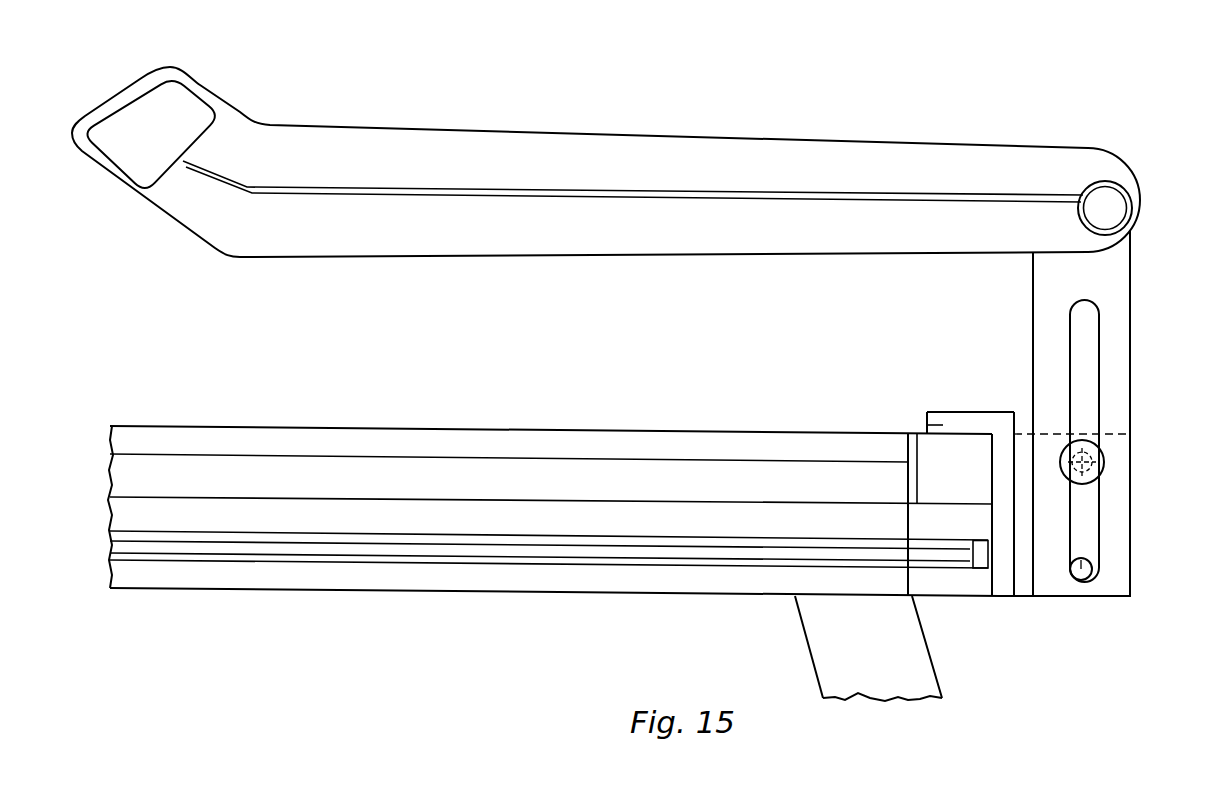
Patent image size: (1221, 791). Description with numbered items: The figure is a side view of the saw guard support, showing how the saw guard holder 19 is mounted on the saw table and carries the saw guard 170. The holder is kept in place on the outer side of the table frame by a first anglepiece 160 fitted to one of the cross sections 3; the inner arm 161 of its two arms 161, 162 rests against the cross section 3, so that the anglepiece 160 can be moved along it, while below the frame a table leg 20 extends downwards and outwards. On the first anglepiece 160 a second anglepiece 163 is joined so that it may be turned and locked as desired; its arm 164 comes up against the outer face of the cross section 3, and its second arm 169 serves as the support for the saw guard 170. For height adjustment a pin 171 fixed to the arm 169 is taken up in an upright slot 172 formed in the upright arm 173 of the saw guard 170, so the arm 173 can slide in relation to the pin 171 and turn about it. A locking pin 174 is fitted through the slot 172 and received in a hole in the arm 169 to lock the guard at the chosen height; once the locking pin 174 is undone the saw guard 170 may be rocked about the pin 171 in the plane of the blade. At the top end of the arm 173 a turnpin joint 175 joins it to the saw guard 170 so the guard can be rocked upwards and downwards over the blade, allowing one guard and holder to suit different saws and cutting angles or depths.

The cross section 3 is at (554, 549).
The saw guard holder 19 is at (1134, 136).
The legs 20 is at (823, 645).
The anglepiece 160 is at (915, 407).
The arm 161 is at (927, 425).
The arm 162 is at (1000, 585).
The second anglepiece 163 is at (1093, 609).
The arm 164 is at (1022, 583).
The second arm 169 is at (1115, 488).
The saw guard 170 is at (580, 150).
The pin 171 is at (1077, 562).
The upright slot 172 is at (1088, 352).
The upright arm 173 is at (1107, 392).
The locking pin 174 is at (1085, 461).
The turnpin joint 175 is at (1130, 226).